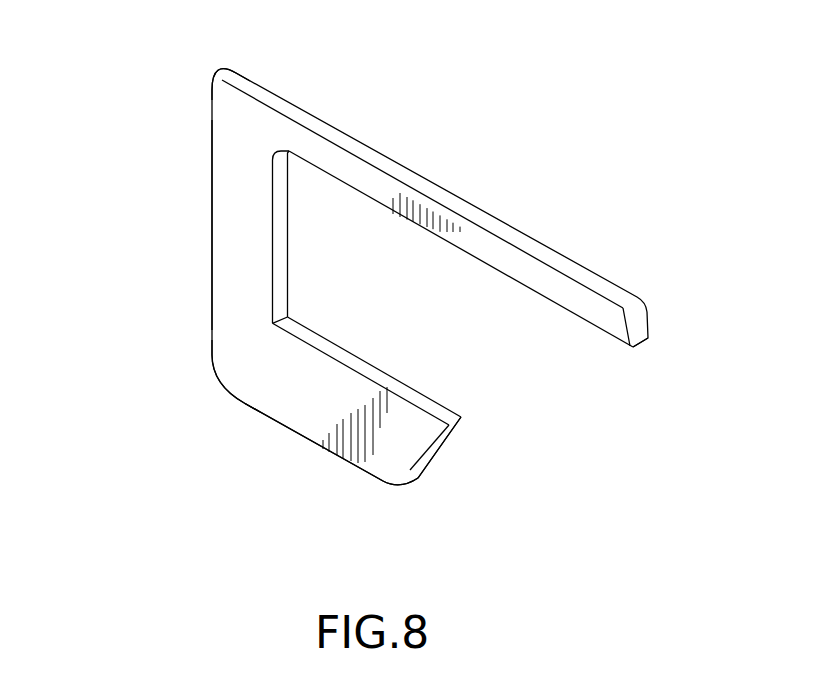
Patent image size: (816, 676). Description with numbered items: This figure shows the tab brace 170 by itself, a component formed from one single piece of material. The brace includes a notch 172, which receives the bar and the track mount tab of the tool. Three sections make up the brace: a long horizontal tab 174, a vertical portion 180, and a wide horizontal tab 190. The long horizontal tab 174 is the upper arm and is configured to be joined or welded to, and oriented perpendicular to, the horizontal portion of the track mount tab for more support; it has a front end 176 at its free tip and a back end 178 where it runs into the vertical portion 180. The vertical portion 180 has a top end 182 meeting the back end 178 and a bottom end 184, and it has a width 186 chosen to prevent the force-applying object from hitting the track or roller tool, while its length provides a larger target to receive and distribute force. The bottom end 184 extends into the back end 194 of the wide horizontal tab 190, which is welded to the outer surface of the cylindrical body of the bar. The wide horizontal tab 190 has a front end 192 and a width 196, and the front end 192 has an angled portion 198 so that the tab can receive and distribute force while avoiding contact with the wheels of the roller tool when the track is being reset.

The tab brace 170 is at (613, 240).
The notch 172 is at (482, 355).
The long horizontal tab 174 is at (477, 212).
The front end 176 is at (618, 358).
The back end 178 is at (318, 110).
The vertical portion 180 is at (147, 173).
The top end 182 is at (177, 97).
The bottom end 184 is at (172, 345).
The width 186 is at (271, 248).
The wide horizontal tab 190 is at (245, 440).
The front end 192 is at (457, 448).
The back end 194 is at (245, 375).
The width 196 is at (340, 372).
The angled portion 198 is at (400, 497).